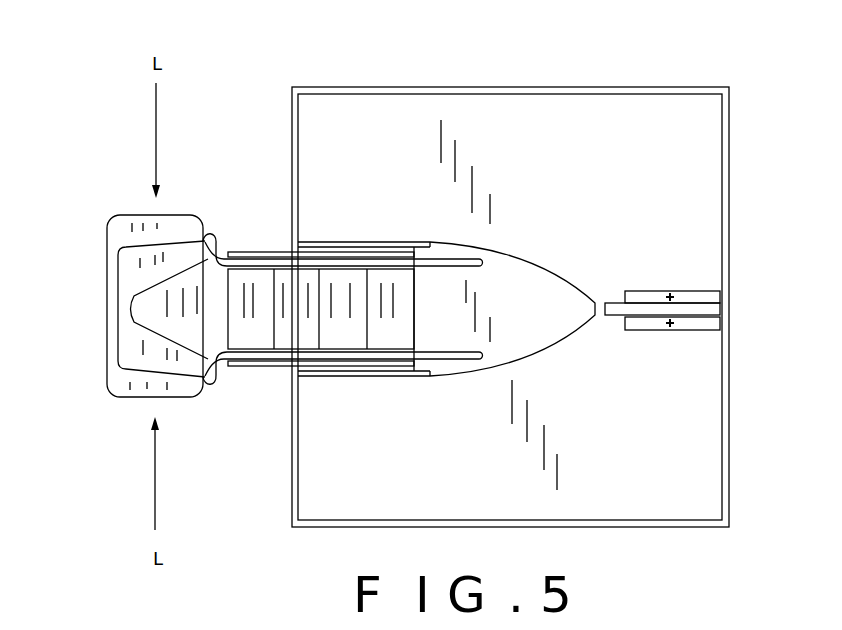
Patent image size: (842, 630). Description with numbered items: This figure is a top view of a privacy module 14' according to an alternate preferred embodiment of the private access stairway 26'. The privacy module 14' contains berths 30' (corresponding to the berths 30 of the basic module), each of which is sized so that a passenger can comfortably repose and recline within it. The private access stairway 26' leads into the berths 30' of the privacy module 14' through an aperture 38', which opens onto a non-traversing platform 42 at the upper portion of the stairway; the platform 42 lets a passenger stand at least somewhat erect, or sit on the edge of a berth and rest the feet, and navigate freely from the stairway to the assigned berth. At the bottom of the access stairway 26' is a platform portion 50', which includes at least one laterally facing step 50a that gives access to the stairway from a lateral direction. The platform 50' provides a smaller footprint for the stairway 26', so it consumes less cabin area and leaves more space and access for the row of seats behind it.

The privacy module 14' is at (510, 274).
The berth 30 is at (620, 172).
The berth 30' is at (654, 435).
The aperture 38' is at (675, 338).
The non-traversing platform 42 is at (550, 312).
The private access stairway 26' is at (353, 337).
The platform portion 50' is at (135, 320).
The laterally facing step 50a is at (177, 387).